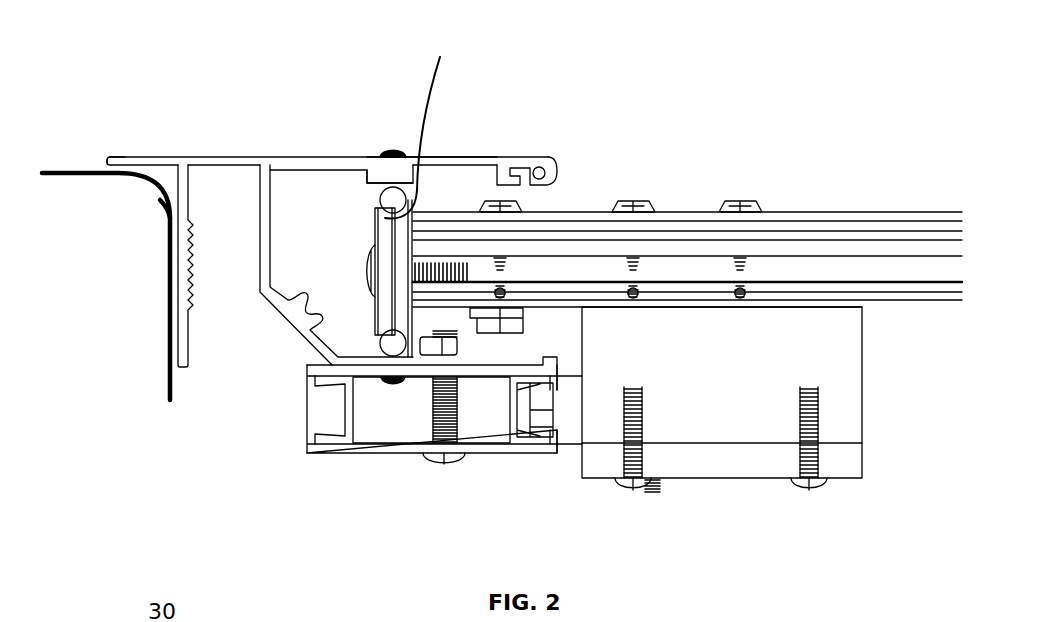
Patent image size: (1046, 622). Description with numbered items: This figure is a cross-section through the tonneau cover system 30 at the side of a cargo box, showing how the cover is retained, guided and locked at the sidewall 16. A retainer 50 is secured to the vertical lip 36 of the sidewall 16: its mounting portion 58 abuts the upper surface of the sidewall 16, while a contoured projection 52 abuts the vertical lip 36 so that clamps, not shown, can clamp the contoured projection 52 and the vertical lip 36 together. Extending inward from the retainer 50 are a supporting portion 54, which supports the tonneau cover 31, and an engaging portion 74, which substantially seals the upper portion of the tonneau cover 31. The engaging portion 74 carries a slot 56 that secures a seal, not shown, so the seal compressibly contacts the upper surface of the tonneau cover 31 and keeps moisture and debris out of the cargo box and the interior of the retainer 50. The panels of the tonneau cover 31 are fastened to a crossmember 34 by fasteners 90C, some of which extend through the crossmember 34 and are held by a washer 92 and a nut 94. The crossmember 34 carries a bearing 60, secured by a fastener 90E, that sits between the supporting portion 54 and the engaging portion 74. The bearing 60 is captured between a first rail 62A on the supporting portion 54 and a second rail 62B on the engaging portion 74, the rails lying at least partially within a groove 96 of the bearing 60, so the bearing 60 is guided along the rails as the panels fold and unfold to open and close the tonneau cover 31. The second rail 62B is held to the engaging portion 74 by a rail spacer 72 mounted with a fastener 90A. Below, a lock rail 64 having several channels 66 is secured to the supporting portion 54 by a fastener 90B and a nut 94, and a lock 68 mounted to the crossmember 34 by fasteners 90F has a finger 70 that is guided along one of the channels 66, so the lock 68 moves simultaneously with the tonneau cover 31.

The sidewall 16 is at (93, 197).
The tonneau cover system 30 is at (835, 108).
The tonneau cover 31 is at (920, 212).
The crossmember 34 is at (880, 245).
The vertical lip 36 is at (168, 272).
The retainer 50 is at (343, 251).
The contoured projection 52 is at (190, 312).
The supporting portion 54 is at (308, 336).
The slot 56 is at (527, 165).
The mounting portion 58 is at (118, 160).
The bearing 60 is at (392, 233).
The first rail 62A is at (390, 343).
The second rail 62B is at (392, 200).
The lock rail 64 is at (385, 448).
The channels 66 is at (323, 440).
The lock 68 is at (848, 374).
The finger 70 is at (533, 407).
The rail spacer 72 is at (377, 178).
The engaging portion 74 is at (460, 162).
The fastener 90A is at (397, 147).
The fastener 90B is at (438, 460).
The fasteners 90C is at (513, 203).
The fastener 90E is at (375, 271).
The fasteners 90F is at (628, 488).
The washer 92 is at (517, 310).
The nut 94 is at (457, 347).
The groove 96 is at (425, 123).